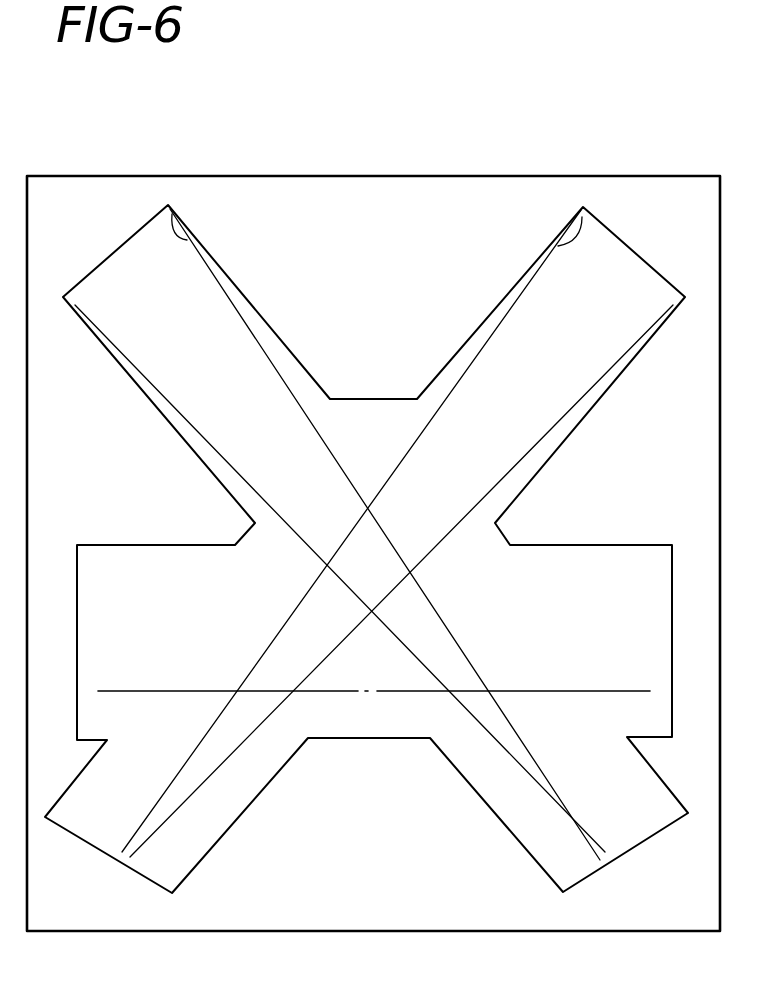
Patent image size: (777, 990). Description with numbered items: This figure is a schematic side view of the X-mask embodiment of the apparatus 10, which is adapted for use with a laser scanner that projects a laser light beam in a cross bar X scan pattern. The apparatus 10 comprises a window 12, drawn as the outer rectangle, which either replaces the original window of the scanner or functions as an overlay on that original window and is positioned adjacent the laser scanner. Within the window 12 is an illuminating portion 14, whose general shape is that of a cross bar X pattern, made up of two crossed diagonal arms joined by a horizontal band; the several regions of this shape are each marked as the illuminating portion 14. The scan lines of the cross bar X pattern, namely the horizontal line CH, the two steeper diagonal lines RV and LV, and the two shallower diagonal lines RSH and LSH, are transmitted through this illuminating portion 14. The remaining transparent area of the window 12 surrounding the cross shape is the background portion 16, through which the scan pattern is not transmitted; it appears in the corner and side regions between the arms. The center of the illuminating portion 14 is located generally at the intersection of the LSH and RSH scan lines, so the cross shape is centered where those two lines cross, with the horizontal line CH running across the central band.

The apparatus 10 is at (441, 150).
The window 12 is at (243, 176).
The illuminating portion 14 is at (184, 330).
The background portion 16 is at (375, 261).
The LV scan line LV is at (168, 206).
The RV scan line RV is at (584, 206).
The LSH scan line LSH is at (125, 361).
The RSH scan line RSH is at (613, 369).
The CH scan line CH is at (590, 692).